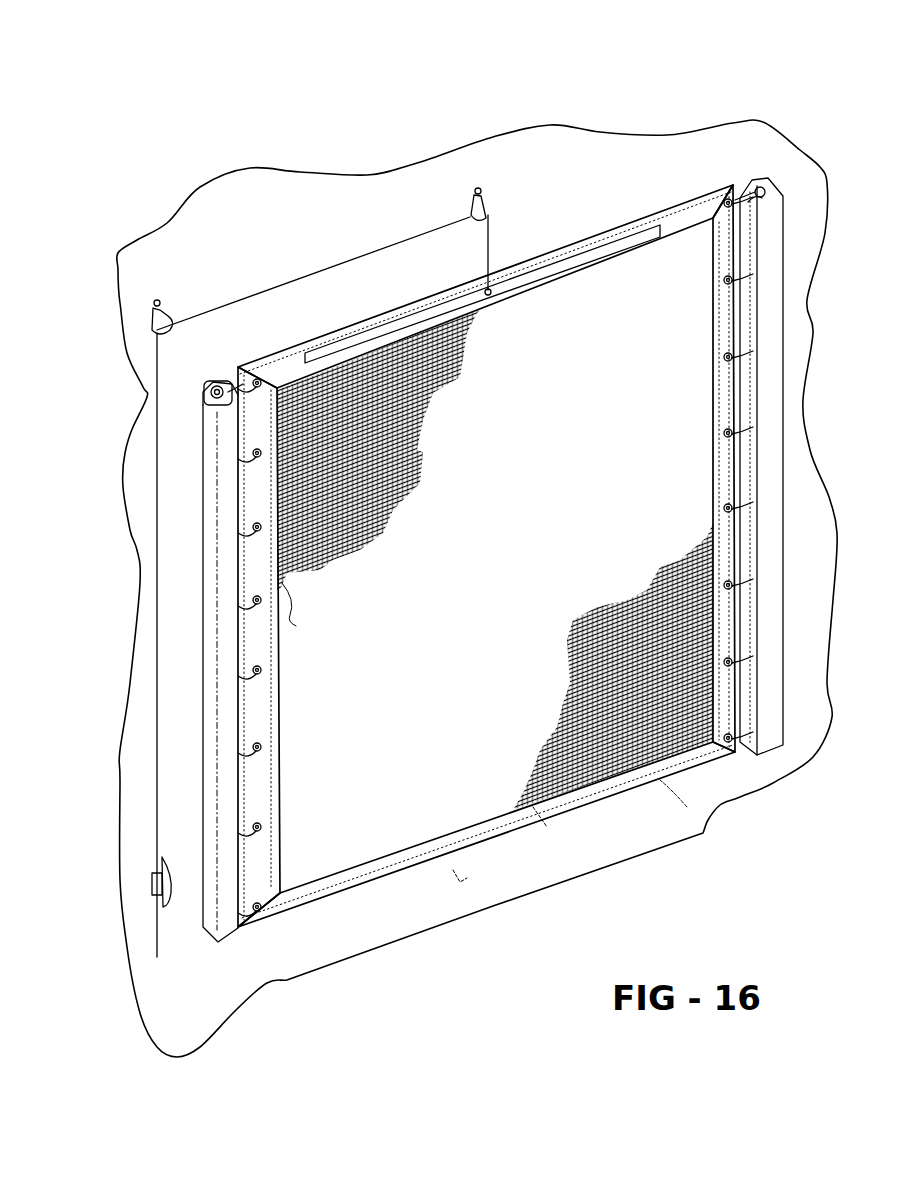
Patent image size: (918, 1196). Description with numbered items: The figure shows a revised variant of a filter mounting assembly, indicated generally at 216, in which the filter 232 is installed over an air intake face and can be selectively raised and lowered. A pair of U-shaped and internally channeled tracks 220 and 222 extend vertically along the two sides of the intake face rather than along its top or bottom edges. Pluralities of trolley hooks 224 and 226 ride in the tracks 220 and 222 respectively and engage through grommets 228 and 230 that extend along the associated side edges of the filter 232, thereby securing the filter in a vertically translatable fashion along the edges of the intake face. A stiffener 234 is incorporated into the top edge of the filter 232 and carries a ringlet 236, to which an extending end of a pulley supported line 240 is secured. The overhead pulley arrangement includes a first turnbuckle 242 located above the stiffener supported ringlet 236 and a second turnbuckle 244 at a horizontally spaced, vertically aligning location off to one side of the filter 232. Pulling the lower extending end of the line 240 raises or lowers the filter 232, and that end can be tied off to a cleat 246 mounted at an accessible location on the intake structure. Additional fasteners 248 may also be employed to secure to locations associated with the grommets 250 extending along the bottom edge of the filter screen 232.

The screen assembly 216 is at (360, 86).
The track 220 is at (203, 457).
The track 222 is at (775, 335).
The trolley hooks 224 is at (235, 467).
The trolley hooks 226 is at (748, 287).
The grommets 228 is at (722, 358).
The grommets 230 is at (296, 626).
The filter 232 is at (497, 549).
The stiffener 234 is at (572, 260).
The ringlet 236 is at (488, 290).
The pulley supported line 240 is at (327, 272).
The first turnbuckle 242 is at (490, 195).
The second turnbuckle 244 is at (157, 323).
The cleat 246 is at (153, 880).
The additional fasteners 248 is at (337, 868).
The grommets 250 is at (433, 836).